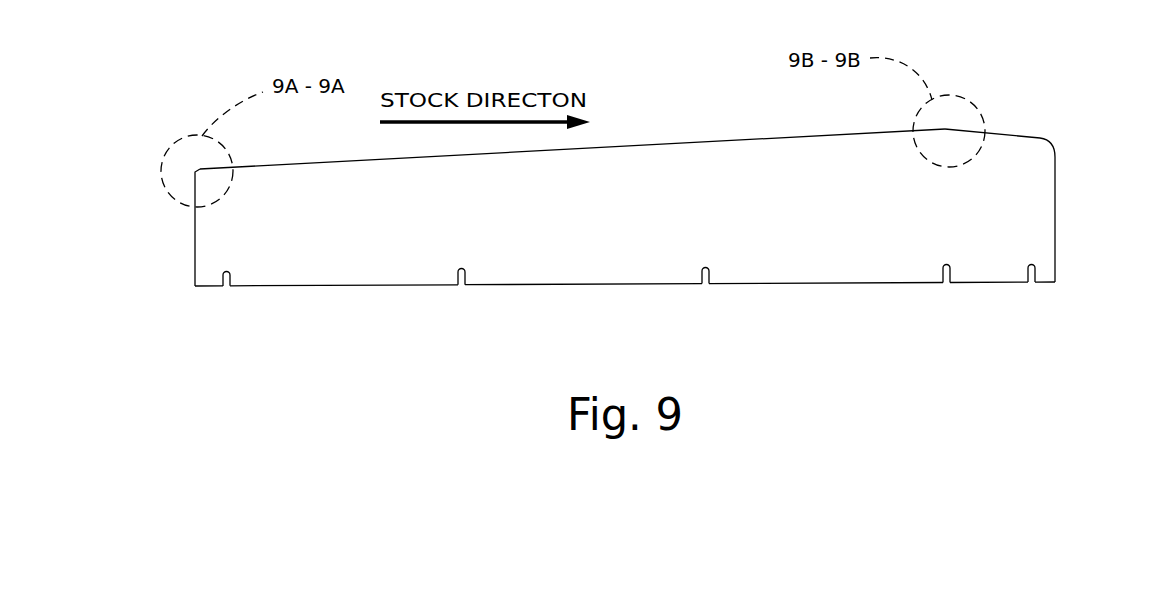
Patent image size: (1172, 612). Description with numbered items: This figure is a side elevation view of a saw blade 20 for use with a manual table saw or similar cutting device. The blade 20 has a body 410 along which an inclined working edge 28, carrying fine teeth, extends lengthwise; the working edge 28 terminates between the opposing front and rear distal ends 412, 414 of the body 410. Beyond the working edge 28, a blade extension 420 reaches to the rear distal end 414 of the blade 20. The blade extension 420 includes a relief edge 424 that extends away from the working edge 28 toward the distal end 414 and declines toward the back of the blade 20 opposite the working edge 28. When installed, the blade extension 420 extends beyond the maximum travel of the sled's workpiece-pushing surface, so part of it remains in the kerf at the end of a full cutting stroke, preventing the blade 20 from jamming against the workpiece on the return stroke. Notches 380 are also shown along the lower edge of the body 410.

The blade 20 is at (746, 106).
The working edge 28 is at (634, 145).
The notches 380 is at (230, 273).
The body 410 is at (658, 223).
The front end 412 is at (193, 252).
The rear end 414 is at (1056, 223).
The blade extension 420 is at (1032, 199).
The relief edge 424 is at (1018, 137).